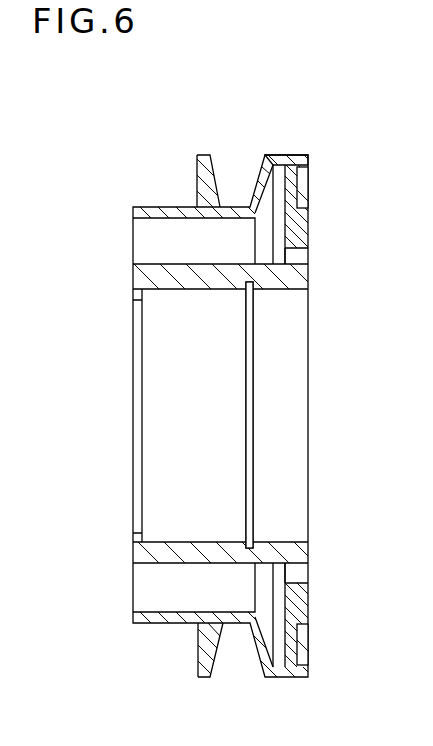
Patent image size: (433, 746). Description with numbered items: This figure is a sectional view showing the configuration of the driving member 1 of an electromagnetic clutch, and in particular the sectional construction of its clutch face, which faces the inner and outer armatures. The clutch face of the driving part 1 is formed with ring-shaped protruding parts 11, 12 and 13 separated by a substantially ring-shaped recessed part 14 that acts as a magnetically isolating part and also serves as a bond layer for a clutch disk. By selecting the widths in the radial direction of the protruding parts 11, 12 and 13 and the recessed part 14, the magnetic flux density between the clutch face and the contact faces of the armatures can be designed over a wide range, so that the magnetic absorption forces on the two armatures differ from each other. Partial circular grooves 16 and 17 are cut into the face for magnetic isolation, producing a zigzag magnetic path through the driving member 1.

The driving member 1 is at (167, 207).
The ring-shaped protruding part 11 is at (308, 160).
The ring-shaped protruding part 12 is at (308, 227).
The ring-shaped protruding part 13 is at (308, 270).
The ring-shaped recessed part 14 is at (298, 190).
The partial circular groove 16 is at (290, 172).
The partial circular groove 17 is at (288, 257).